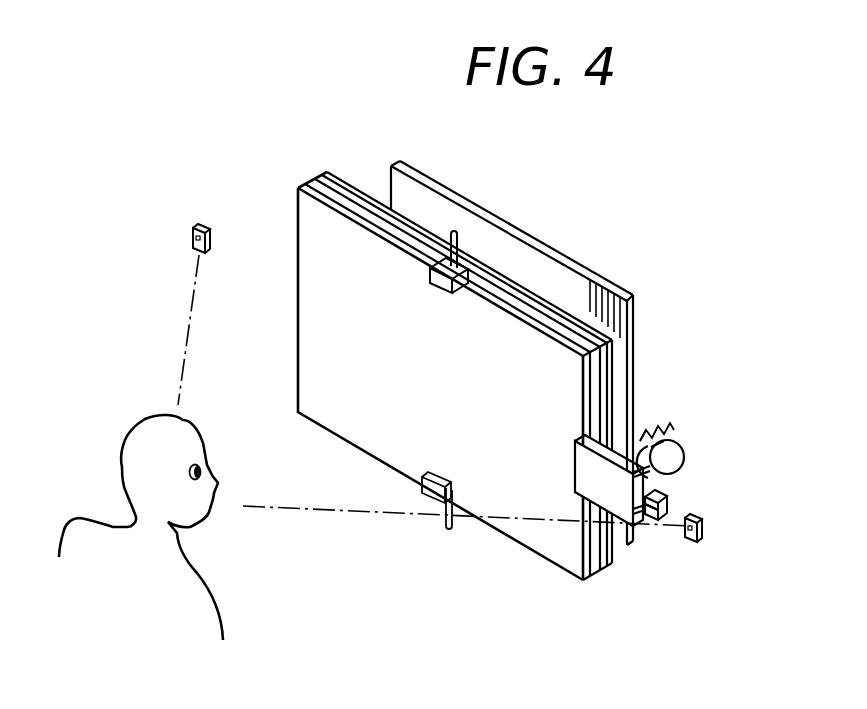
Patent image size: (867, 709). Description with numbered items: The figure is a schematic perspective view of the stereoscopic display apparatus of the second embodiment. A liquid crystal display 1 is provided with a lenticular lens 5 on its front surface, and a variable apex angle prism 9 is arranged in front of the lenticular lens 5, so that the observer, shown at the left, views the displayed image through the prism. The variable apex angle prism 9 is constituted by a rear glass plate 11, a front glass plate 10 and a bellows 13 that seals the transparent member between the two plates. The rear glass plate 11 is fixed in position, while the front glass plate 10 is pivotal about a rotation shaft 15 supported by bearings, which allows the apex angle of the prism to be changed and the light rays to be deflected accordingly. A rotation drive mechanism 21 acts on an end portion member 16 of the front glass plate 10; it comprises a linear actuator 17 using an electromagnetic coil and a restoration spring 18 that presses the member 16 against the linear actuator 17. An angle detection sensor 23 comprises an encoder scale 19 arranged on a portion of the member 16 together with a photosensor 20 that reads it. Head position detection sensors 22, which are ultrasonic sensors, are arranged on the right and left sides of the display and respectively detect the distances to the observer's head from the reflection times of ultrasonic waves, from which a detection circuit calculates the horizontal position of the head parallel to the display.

The liquid crystal display 1 is at (402, 158).
The lenticular lens 5 is at (390, 163).
The variable apex angle prism 9 is at (207, 158).
The front glass plate 10 is at (297, 188).
The rear glass plate 11 is at (324, 173).
The bellows 13 is at (314, 180).
The rotation shaft 15 is at (465, 238).
The end portion member 16 is at (595, 484).
The linear actuator 17 is at (673, 453).
The restoration spring 18 is at (643, 438).
The encoder scale 19 is at (660, 494).
The photosensor 20 is at (668, 508).
The rotation drive mechanism 21 is at (729, 361).
The head position detection sensors 22 is at (193, 224).
The angle detection sensor 23 is at (750, 441).